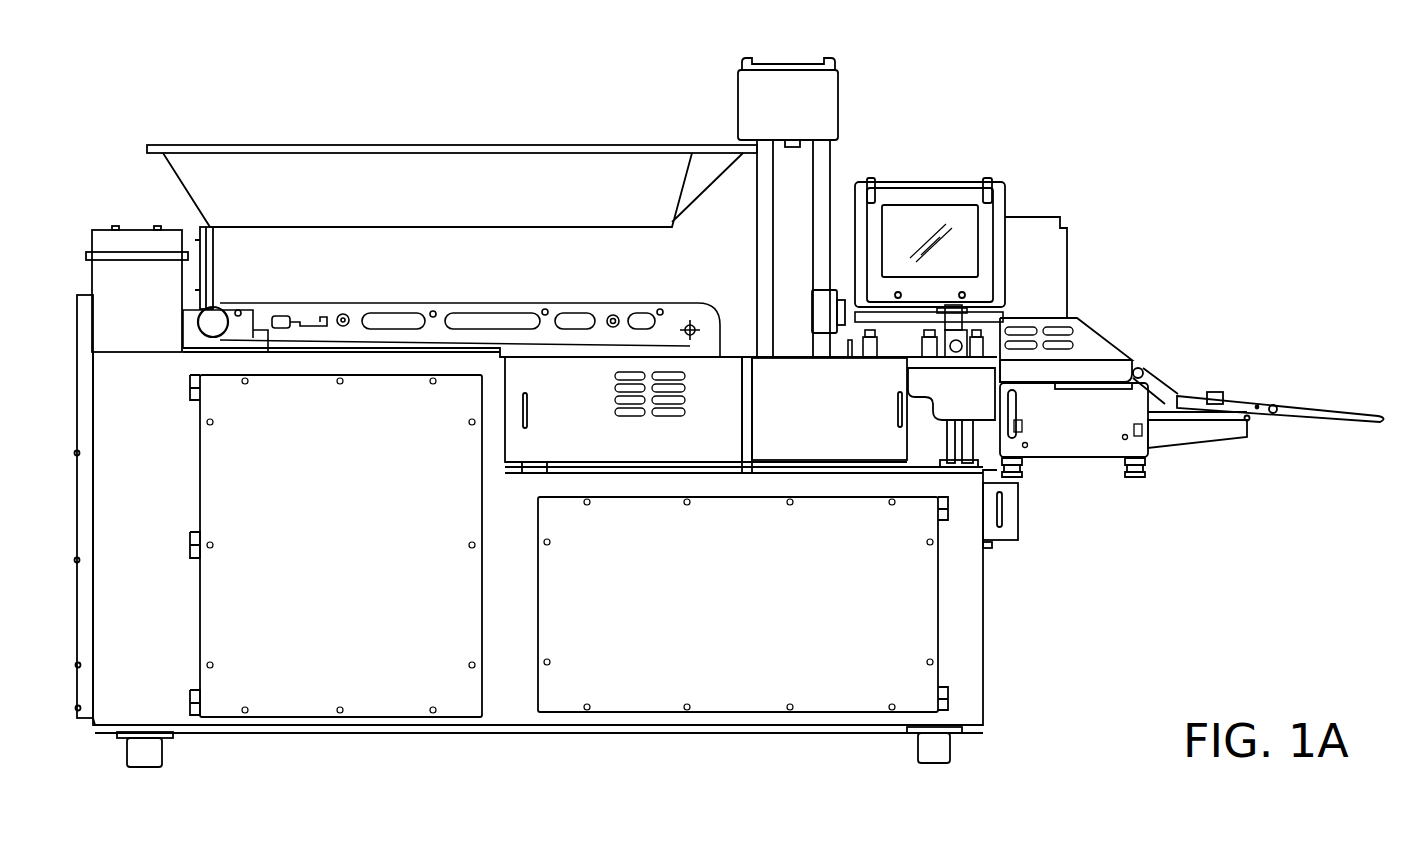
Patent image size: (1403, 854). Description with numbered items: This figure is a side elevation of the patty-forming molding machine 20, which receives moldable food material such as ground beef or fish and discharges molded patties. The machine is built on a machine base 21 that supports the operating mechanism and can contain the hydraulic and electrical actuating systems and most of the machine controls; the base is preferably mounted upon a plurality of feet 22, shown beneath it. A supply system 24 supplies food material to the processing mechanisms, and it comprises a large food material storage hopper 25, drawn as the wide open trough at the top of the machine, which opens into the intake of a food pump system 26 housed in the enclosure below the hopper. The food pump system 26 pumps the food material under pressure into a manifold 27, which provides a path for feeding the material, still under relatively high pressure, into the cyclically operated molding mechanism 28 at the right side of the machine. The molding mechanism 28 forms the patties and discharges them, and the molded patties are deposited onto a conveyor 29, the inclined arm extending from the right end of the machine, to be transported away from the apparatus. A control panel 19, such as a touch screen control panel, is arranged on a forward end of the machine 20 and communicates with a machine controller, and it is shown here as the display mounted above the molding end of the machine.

The control panel 19 is at (935, 173).
The molding machine 20 is at (926, 214).
The machine base 21 is at (985, 620).
The feet 22 is at (953, 747).
The supply system 24 is at (697, 125).
The food material storage hopper 25 is at (345, 150).
The food pump system 26 is at (690, 430).
The manifold 27 is at (972, 395).
The molding mechanism 28 is at (1015, 203).
The conveyor 29 is at (1280, 433).